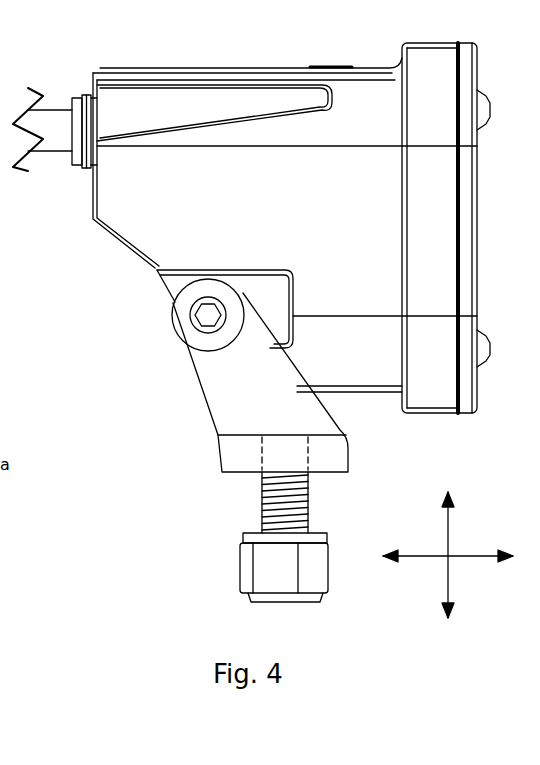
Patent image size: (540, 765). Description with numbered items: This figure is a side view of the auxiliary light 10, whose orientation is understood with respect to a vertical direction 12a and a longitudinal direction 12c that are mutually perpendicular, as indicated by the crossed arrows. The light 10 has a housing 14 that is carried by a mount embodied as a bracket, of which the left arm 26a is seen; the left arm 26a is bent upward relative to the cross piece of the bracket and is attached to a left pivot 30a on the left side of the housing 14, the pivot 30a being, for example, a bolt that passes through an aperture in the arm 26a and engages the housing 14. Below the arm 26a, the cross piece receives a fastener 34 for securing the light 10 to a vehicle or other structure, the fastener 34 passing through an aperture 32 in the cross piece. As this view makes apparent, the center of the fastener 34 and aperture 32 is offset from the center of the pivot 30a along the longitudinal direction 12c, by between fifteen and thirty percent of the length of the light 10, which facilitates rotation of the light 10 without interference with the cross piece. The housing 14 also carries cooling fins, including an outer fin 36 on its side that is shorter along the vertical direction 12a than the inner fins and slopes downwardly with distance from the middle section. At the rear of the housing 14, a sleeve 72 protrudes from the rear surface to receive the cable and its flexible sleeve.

The auxiliary light 10 is at (66, 380).
The vertical direction 12a is at (446, 574).
The longitudinal direction 12c is at (430, 553).
The housing 14 is at (60, 222).
The left arm 26a is at (218, 382).
The left pivot 30a is at (193, 323).
The aperture 32 is at (258, 460).
The fastener 34 is at (313, 562).
The outer fins 36 is at (145, 228).
The sleeve 72 is at (118, 112).